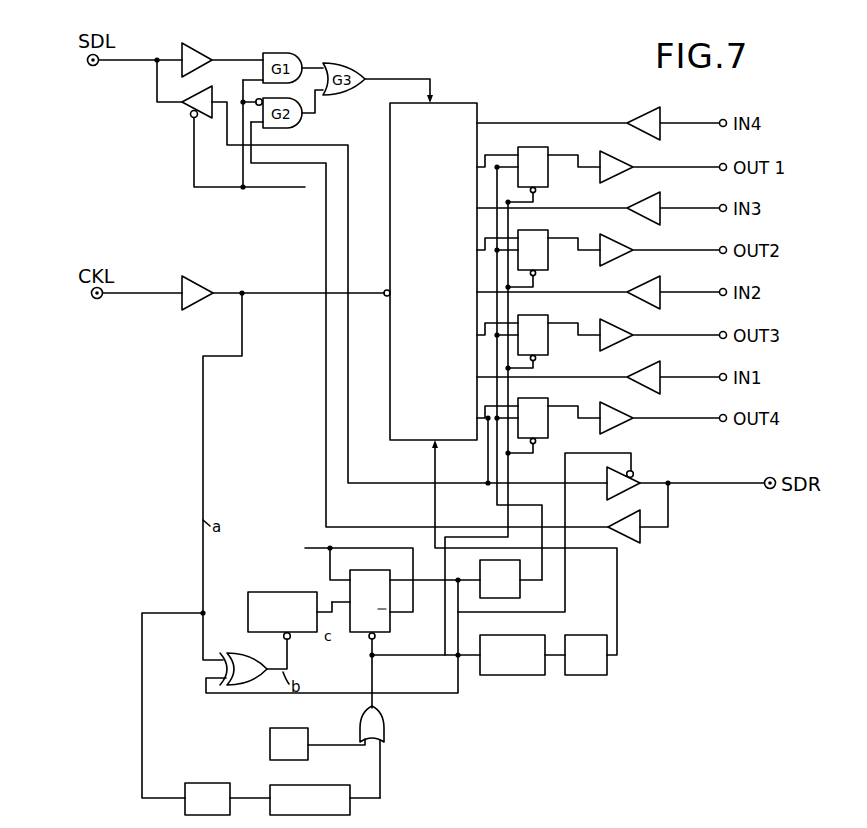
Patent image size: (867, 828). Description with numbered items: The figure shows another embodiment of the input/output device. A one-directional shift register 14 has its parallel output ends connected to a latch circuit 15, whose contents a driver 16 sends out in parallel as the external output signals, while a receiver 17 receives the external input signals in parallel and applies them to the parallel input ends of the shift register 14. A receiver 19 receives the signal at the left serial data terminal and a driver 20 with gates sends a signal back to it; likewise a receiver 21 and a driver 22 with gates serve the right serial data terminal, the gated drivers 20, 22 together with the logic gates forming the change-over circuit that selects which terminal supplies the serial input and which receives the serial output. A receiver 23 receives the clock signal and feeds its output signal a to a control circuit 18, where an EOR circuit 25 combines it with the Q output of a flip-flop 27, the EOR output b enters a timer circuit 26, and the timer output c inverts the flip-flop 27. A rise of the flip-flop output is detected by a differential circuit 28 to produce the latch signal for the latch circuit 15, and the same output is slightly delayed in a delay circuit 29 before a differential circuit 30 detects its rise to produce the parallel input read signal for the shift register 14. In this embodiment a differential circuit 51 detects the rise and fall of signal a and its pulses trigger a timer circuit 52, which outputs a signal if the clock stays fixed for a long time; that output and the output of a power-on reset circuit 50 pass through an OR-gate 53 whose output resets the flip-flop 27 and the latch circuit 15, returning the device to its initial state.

The shift register 14 is at (457, 103).
The latch circuit 15 is at (548, 152).
The driver 16 is at (620, 161).
The receiver 17 is at (657, 110).
The control circuit 18 is at (452, 701).
The receiver 19 is at (186, 52).
The driver with gates 20 is at (189, 119).
The receiver 21 is at (632, 546).
The driver with gates 22 is at (634, 476).
The receiver 23 is at (243, 288).
The EOR circuit 25 is at (247, 654).
The timer circuit 26 is at (281, 592).
The flip-flop 27 is at (352, 634).
The differential circuit 28 is at (520, 591).
The delay circuit 29 is at (514, 676).
The differential circuit 30 is at (580, 676).
The power-on reset circuit 50 is at (269, 744).
The differential circuit 51 is at (220, 783).
The timer circuit 52 is at (321, 785).
The OR-gate 53 is at (385, 722).